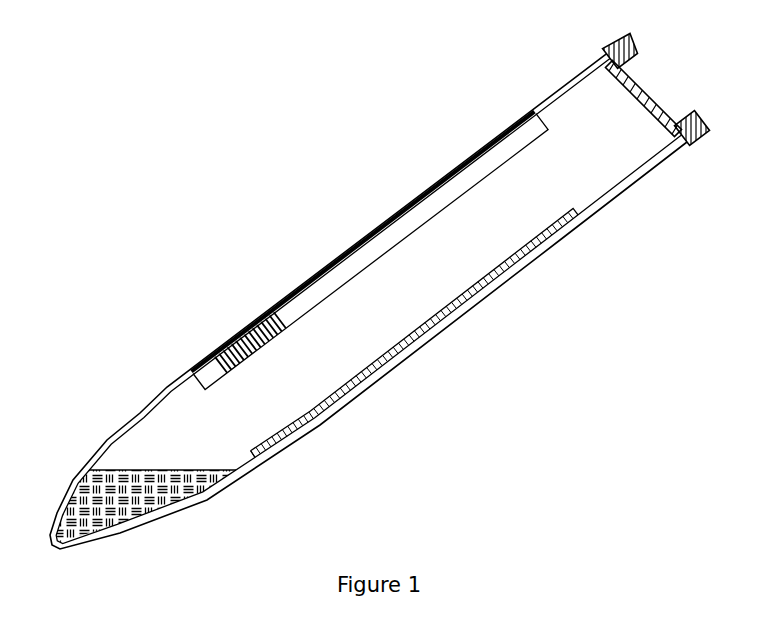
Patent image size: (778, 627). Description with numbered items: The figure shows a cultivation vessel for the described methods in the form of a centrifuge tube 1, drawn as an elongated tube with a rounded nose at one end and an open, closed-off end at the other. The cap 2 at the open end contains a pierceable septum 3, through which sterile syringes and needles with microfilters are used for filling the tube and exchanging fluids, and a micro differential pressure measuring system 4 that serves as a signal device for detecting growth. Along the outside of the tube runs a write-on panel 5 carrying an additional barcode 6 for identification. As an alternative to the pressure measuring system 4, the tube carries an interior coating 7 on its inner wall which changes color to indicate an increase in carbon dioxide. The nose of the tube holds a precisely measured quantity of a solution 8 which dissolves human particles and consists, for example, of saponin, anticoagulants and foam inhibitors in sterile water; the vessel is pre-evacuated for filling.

The centrifuge tube 1 is at (368, 301).
The cap 2 is at (697, 127).
The pierceable septum 3 is at (644, 98).
The micro differential pressure measuring system 4 is at (616, 67).
The write-on panel 5 is at (370, 251).
The barcode 6 is at (248, 342).
The interior coating 7 is at (414, 332).
The solution 8 is at (139, 506).